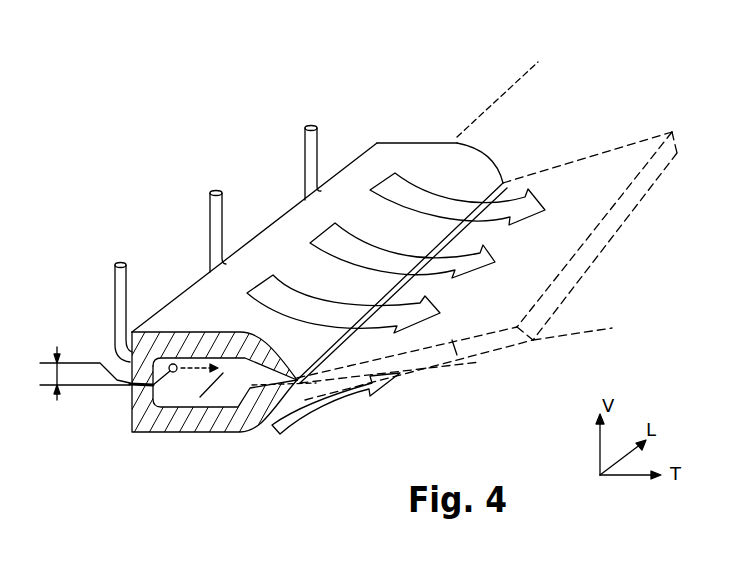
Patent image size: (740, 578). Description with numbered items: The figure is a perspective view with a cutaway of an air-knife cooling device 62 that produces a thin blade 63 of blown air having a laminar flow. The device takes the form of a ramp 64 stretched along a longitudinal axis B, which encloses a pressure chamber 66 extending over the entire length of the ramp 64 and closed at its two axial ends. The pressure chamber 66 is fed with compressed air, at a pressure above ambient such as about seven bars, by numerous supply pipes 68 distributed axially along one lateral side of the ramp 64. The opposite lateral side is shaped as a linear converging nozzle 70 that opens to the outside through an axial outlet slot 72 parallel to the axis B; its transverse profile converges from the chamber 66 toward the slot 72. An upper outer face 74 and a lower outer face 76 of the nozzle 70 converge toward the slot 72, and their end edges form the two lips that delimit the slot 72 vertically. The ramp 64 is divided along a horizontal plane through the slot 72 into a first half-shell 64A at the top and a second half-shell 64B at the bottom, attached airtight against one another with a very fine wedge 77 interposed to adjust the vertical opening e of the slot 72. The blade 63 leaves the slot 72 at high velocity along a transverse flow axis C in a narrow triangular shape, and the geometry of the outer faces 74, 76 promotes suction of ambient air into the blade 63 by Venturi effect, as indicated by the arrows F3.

The cooling device 62 is at (355, 110).
The blade of blown gas 63 is at (507, 378).
The ramp 64 is at (423, 146).
The first half-shell 64A is at (145, 345).
The second half-shell 64B is at (143, 417).
The pressure chamber 66 is at (220, 410).
The supply pipes 68 is at (305, 148).
The linear converging nozzle 70 is at (252, 390).
The axial outlet slot 72 is at (462, 226).
The upper outer face 74 is at (472, 168).
The lower outer face 76 is at (468, 246).
The wedge 77 is at (130, 396).
The arrows indicating suction of ambient air F3 is at (438, 232).
The axis of the ramp B is at (515, 78).
The flow axis C is at (580, 332).
The vertical opening of the slot e is at (83, 373).